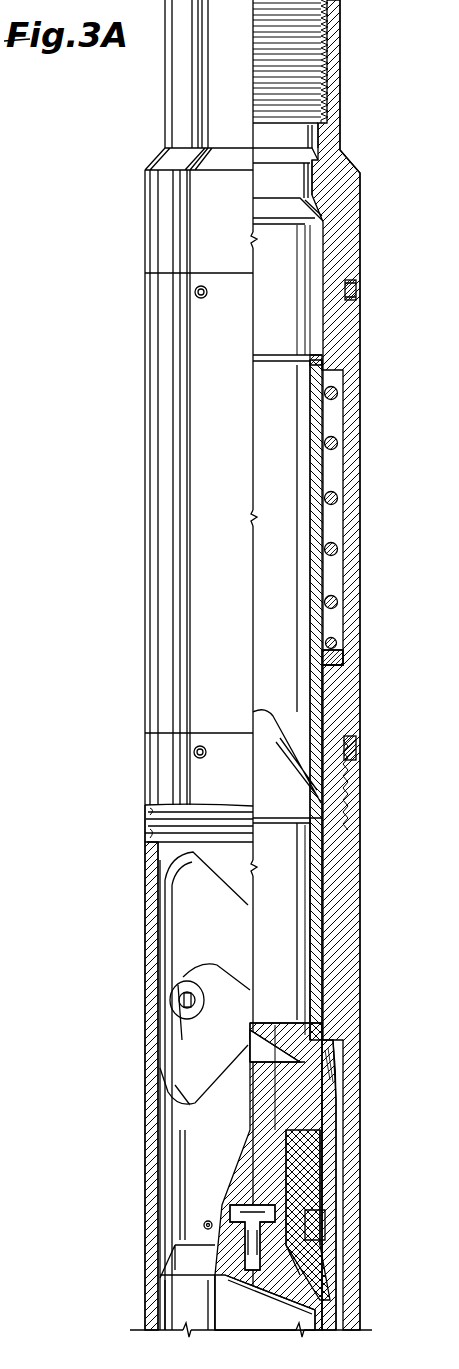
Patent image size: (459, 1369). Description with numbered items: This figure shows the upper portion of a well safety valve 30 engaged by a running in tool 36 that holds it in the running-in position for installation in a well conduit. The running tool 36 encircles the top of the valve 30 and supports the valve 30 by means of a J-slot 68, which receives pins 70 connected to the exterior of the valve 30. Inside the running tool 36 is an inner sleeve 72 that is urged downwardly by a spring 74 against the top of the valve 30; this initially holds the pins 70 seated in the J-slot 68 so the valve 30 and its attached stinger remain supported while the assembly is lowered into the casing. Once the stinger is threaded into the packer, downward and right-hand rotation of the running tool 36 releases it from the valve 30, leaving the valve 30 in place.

The valve 30 is at (300, 933).
The running in tool 36 is at (372, 236).
The J-slot 68 is at (166, 932).
The pins 70 is at (186, 1022).
The inner sleeve 72 is at (322, 426).
The spring 74 is at (334, 504).